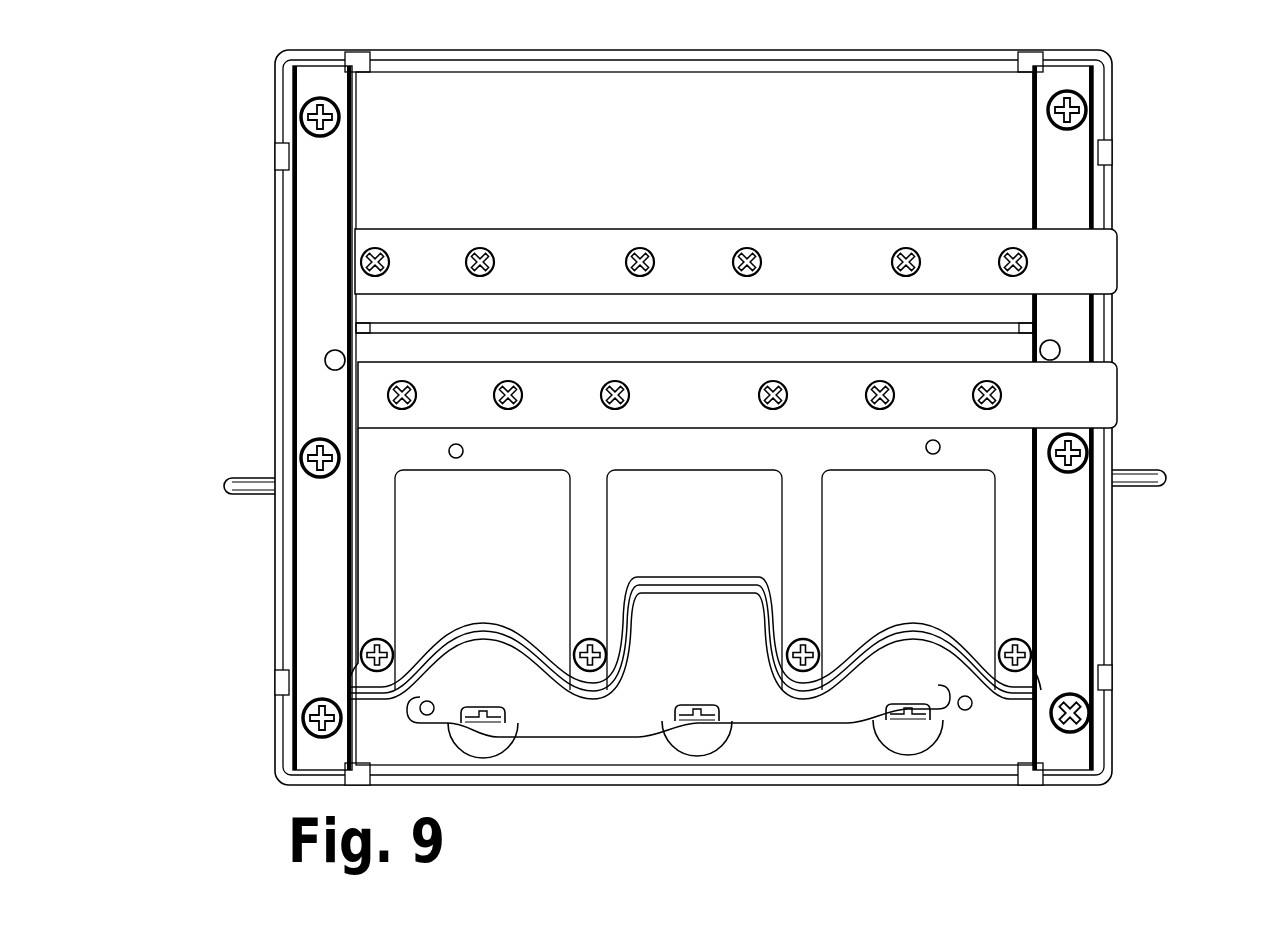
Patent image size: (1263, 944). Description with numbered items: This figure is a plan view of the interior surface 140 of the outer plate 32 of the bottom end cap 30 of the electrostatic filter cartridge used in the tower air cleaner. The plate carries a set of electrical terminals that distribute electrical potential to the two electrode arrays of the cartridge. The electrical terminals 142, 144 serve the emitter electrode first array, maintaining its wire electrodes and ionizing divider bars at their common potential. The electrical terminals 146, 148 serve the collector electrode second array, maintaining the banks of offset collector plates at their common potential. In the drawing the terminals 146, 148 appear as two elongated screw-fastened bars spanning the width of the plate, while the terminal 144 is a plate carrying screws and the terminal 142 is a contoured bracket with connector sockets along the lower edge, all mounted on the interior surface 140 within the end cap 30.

The bottom end cap 30 is at (1130, 157).
The outer plate 32 is at (433, 157).
The interior surface of the outer plate 140 is at (257, 553).
The electrical terminal 142 is at (585, 707).
The electrical terminal 144 is at (1012, 578).
The electrical terminal 146 is at (1117, 257).
The electrical terminal 148 is at (1117, 387).